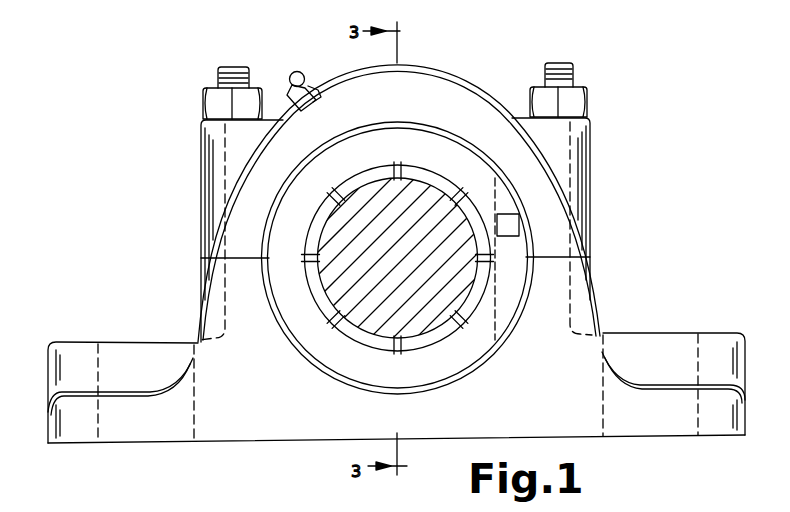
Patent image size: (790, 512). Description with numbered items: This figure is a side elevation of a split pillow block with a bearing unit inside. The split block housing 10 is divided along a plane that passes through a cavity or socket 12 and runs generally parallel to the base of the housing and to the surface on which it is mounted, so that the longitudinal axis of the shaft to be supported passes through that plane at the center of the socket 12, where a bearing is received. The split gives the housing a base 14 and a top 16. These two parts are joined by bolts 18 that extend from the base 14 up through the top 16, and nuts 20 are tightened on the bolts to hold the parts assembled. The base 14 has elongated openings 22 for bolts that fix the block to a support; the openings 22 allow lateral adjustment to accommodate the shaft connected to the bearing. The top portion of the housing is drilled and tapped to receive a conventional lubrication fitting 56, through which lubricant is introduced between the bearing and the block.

The split block housing 10 is at (602, 197).
The cavity or socket 12 is at (418, 124).
The base 14 is at (592, 268).
The top 16 is at (585, 149).
The bolts 18 is at (573, 72).
The nuts 20 is at (204, 104).
The elongated openings 22 is at (697, 355).
The lubrication fitting 56 is at (292, 72).